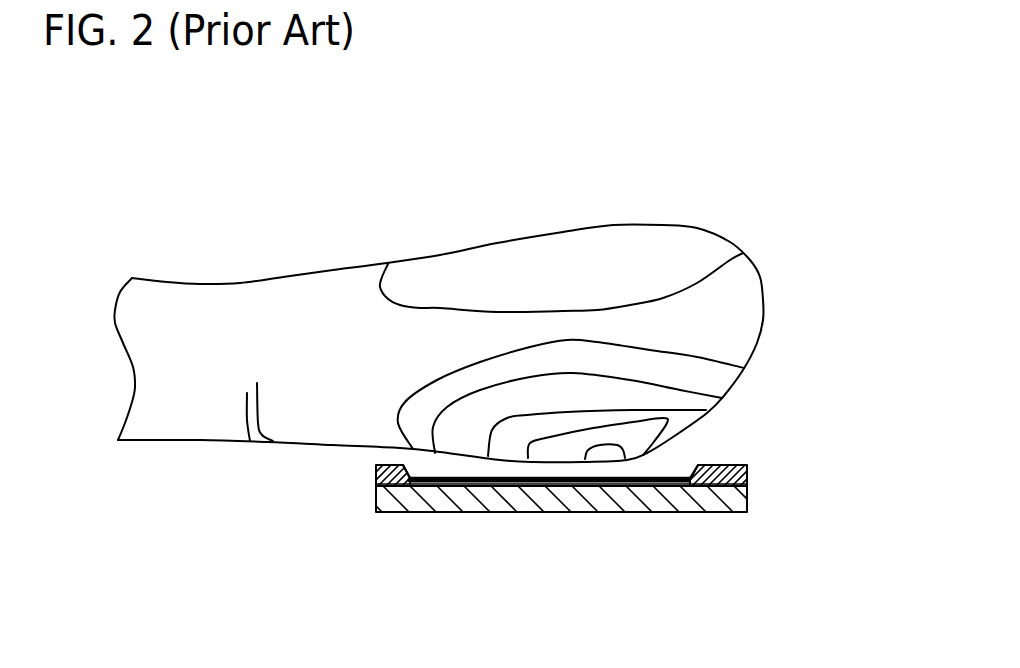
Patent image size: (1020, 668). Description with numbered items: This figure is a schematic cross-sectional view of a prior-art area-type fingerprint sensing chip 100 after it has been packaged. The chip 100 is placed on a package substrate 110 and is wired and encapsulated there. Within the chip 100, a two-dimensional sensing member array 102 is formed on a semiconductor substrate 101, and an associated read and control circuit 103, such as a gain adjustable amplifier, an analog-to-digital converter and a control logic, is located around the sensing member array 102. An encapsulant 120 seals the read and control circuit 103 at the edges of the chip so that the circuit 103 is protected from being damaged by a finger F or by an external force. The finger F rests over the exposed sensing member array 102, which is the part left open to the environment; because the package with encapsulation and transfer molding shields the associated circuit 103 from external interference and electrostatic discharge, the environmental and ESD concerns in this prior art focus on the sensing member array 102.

The area-type fingerprint sensing chip 100 is at (591, 343).
The semiconductor substrate 101 is at (676, 488).
The two-dimensional sensing member array 102 is at (490, 483).
The read and control circuit 103 is at (401, 489).
The package substrate 110 is at (575, 505).
The encapsulant 120 is at (748, 468).
The finger F is at (760, 335).